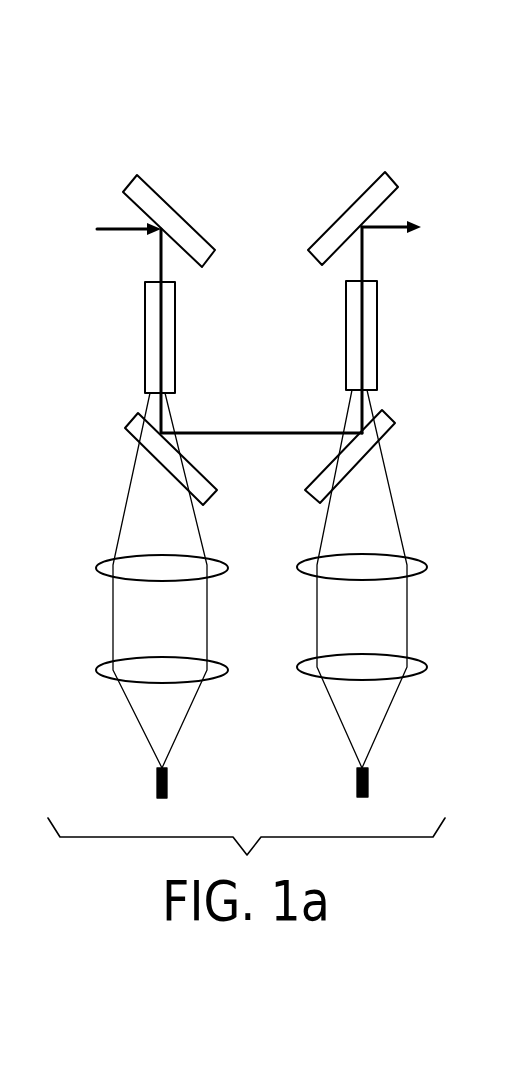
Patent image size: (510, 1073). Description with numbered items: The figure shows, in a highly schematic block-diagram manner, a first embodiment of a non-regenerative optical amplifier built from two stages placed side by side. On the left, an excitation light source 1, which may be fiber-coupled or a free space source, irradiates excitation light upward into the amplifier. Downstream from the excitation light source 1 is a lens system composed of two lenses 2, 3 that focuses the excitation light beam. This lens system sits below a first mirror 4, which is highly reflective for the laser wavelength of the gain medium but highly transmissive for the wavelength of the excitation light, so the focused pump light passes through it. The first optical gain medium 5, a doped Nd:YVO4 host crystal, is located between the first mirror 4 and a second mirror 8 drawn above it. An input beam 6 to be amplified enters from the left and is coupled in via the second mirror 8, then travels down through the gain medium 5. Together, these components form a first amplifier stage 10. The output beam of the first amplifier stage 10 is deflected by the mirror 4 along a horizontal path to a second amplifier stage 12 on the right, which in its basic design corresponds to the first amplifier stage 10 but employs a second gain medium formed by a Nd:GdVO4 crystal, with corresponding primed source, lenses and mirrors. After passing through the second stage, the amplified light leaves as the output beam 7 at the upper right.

The excitation light source 1 is at (155, 790).
The lens 2 is at (93, 672).
The lens 3 is at (93, 568).
The first mirror 4 is at (125, 429).
The first optical gain medium 5 is at (143, 335).
The input beam 6 is at (97, 229).
The output beam 7 is at (424, 229).
The second mirror 8 is at (123, 191).
The first amplifier stage 10 is at (172, 153).
The second amplifier stage 12 is at (373, 148).